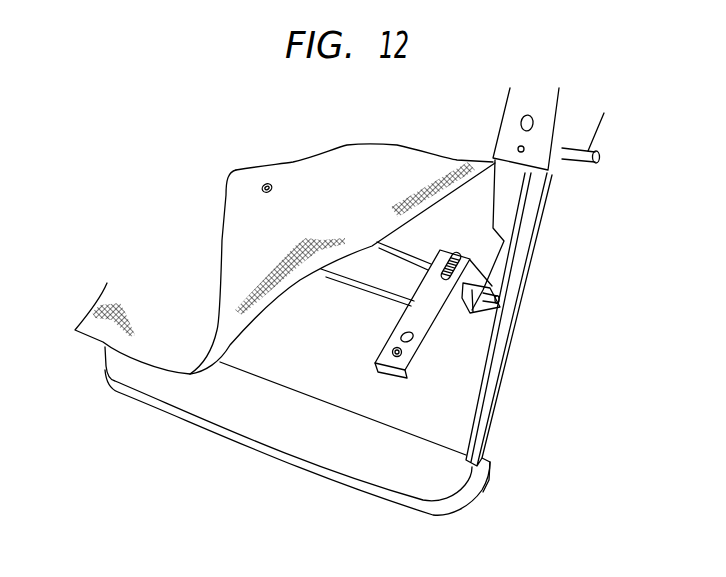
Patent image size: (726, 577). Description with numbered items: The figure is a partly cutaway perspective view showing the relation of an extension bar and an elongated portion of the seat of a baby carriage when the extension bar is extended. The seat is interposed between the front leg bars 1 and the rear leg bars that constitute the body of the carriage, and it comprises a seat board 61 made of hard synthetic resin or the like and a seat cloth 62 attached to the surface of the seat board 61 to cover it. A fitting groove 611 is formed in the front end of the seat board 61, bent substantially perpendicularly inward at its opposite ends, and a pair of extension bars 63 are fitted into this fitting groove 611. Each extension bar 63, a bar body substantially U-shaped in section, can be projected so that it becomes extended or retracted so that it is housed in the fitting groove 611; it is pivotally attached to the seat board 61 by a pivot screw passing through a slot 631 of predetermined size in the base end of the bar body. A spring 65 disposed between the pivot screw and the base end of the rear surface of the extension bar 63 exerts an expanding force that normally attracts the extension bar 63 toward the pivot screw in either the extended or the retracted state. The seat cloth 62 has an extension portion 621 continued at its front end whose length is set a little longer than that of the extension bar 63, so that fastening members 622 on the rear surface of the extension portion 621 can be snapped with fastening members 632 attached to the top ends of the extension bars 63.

The front leg bar 1 is at (483, 411).
The seat board 61 is at (486, 226).
The fitting groove 611 is at (355, 268).
The seat cloth 62 is at (472, 122).
The extension portion 621 is at (230, 232).
The fastening member 622 is at (270, 182).
The extension bar 63 is at (402, 317).
The slot 631 is at (452, 271).
The fastening member 632 is at (411, 352).
The spring 65 is at (457, 253).